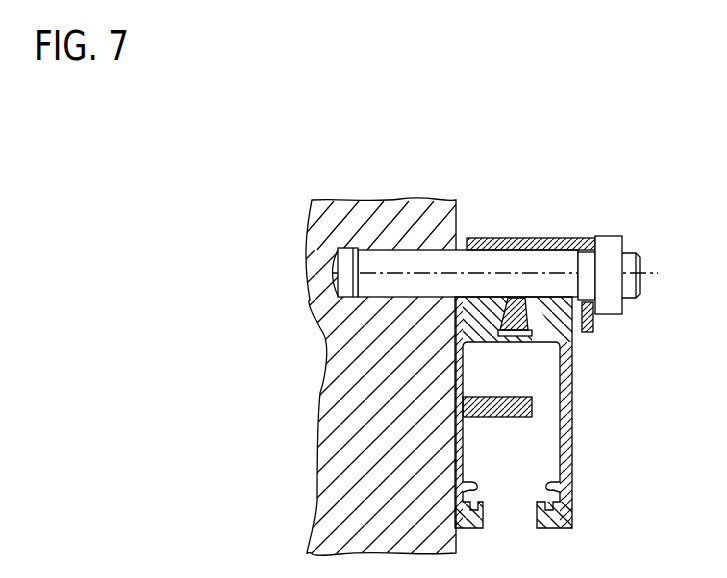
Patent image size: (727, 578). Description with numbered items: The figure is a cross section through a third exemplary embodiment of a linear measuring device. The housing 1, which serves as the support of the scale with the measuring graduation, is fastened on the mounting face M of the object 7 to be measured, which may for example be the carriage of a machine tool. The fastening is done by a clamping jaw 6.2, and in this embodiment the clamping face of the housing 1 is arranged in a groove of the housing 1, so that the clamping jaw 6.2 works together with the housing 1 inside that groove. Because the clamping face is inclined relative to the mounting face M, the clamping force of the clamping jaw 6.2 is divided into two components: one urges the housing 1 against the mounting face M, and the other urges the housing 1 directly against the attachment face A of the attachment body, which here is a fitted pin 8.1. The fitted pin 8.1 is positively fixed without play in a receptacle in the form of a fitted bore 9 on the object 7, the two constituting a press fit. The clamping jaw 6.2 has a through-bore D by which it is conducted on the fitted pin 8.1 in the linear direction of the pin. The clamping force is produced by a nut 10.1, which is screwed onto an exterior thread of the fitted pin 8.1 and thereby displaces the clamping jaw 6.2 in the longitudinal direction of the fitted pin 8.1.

The object to be measured 7 is at (342, 503).
The fitted pin 8.1 is at (463, 270).
The fitted bore 9 is at (343, 270).
The clamping jaw 6.2 is at (503, 240).
The through-bore D is at (567, 246).
The nut 10.1 is at (607, 255).
The attachment face A is at (560, 312).
The housing 1 is at (553, 506).
The mounting face M is at (457, 545).